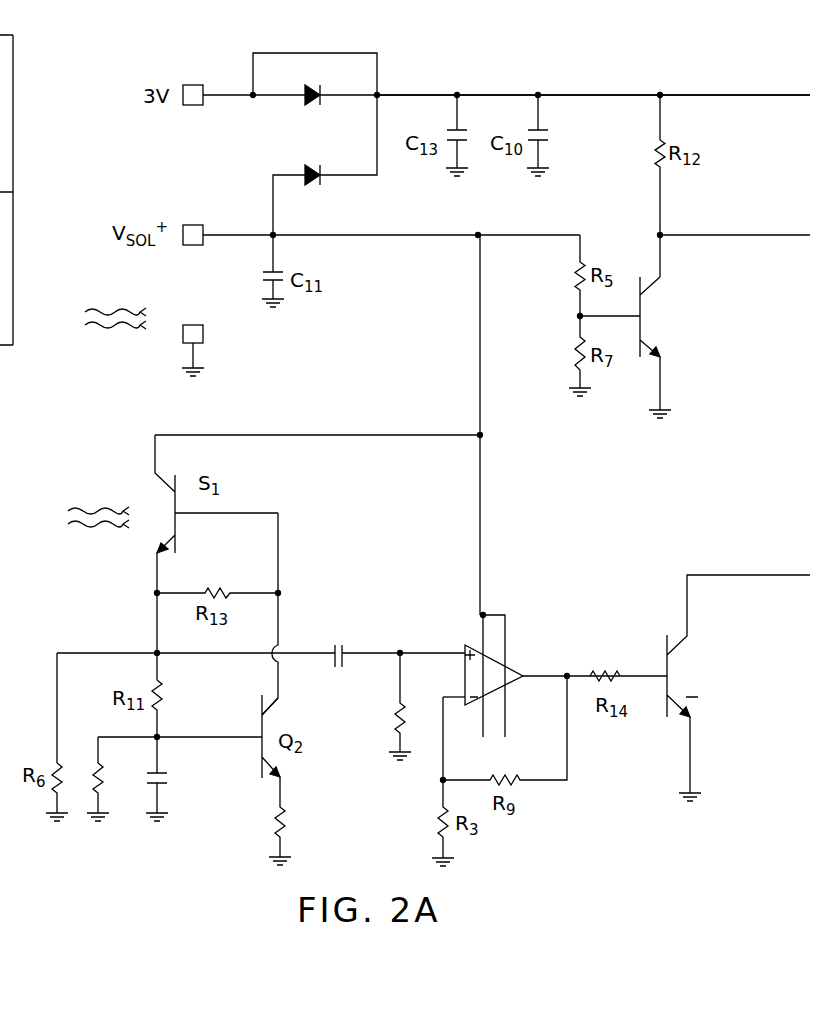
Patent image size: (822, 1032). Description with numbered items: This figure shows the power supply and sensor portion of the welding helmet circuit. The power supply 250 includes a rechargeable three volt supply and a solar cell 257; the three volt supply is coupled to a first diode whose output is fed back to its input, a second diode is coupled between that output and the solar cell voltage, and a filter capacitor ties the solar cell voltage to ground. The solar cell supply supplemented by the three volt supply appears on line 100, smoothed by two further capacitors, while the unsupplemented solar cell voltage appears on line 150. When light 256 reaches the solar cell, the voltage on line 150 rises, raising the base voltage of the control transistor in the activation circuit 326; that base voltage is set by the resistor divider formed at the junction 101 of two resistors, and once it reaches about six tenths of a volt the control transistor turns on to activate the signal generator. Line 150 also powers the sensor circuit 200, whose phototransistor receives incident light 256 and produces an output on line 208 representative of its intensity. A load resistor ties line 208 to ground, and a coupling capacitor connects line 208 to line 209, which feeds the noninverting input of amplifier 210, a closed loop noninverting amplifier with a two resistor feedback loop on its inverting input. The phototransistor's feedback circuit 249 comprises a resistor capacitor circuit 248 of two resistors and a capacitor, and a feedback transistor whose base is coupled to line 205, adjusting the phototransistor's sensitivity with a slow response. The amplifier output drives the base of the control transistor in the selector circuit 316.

The line 100 is at (576, 80).
The junction 101 is at (575, 312).
The line 150 is at (500, 233).
The sensor circuit 200 is at (325, 583).
The line 205 is at (184, 735).
The line 208 is at (157, 615).
The line 209 is at (408, 645).
The amplifier 210 is at (518, 658).
The resistor capacitor circuit 248 is at (140, 823).
The feedback circuit 249 is at (305, 858).
The power supply 250 is at (232, 166).
The light 256 is at (118, 328).
The solar cell 257 is at (218, 305).
The selector circuit 316 is at (660, 780).
The activation circuit 326 is at (628, 412).